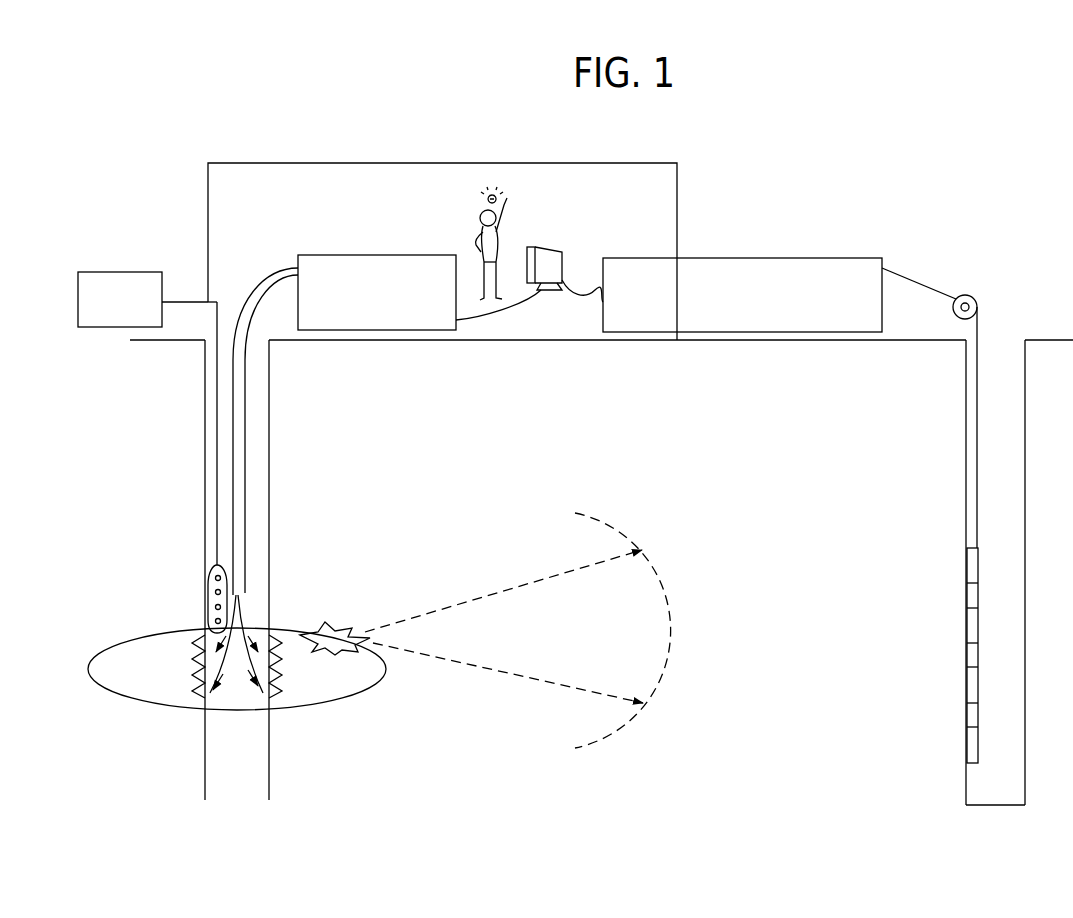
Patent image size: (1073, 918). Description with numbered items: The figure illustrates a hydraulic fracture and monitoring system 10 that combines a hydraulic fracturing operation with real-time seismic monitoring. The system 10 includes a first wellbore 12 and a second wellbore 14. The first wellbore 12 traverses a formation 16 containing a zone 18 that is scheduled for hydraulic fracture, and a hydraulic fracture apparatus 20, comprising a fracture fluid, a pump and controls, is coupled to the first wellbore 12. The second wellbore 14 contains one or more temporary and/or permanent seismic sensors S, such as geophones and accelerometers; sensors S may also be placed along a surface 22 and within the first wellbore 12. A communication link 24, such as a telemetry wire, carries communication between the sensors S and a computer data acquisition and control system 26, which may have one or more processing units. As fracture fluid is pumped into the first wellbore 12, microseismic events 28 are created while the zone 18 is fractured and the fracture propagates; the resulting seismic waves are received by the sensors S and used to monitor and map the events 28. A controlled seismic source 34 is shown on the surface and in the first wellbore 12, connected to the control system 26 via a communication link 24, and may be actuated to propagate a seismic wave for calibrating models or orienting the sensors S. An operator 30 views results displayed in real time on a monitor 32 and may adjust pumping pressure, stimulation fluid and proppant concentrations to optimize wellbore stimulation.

The hydraulic fracture and monitoring system 10 is at (1007, 287).
The first wellbore 12 is at (269, 418).
The second wellbore 14 is at (966, 438).
The formation 16 is at (307, 513).
The zone 18 is at (307, 710).
The hydraulic fracture apparatus 20 is at (372, 255).
The surface 22 is at (535, 340).
The communication link 24 is at (448, 163).
The computer data acquisition and control system 26 is at (722, 258).
The microseismic events 28 is at (343, 628).
The operator 30 is at (513, 208).
The monitor 32 is at (553, 257).
The controlled seismic source 34 is at (134, 311).
The seismic sensors S is at (967, 572).